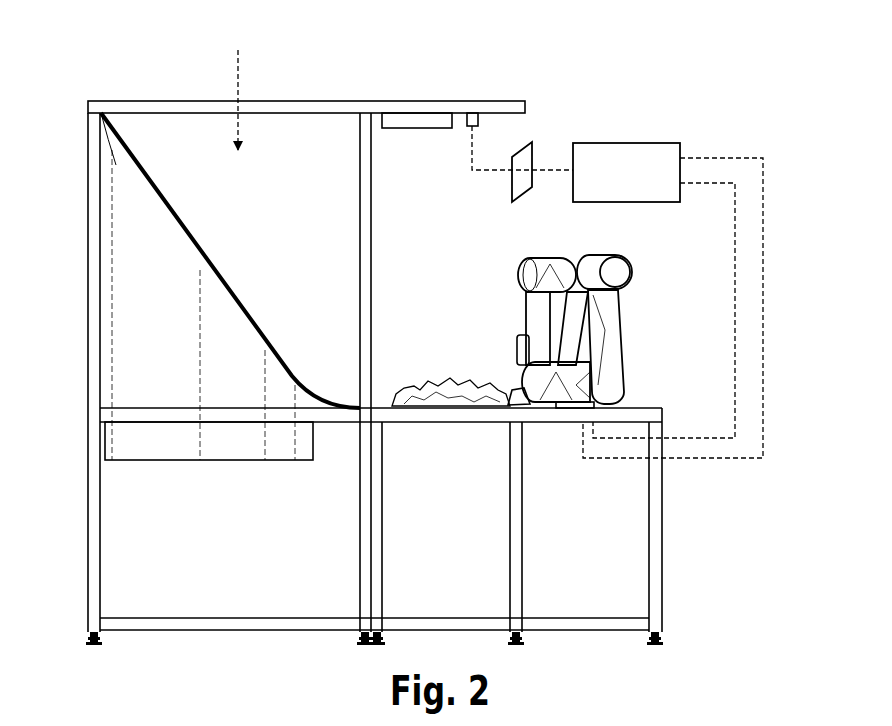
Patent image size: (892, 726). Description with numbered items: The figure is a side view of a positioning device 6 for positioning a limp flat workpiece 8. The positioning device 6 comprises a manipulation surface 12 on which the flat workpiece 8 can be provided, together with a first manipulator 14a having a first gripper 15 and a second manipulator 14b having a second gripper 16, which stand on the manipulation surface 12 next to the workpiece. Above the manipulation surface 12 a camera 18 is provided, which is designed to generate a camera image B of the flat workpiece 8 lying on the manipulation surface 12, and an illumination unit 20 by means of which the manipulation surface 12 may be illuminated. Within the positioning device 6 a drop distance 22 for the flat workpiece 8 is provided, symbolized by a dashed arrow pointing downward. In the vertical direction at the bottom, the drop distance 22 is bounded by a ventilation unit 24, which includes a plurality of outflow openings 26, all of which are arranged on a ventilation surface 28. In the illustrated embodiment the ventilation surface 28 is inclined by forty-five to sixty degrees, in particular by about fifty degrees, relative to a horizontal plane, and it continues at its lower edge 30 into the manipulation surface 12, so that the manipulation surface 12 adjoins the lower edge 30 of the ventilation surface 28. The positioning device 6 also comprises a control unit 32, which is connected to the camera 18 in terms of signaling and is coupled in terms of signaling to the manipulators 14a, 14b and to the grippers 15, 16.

The positioning device 6 is at (492, 90).
The flat workpiece 8 is at (446, 378).
The manipulation surface 12 is at (628, 404).
The first manipulator 14a is at (548, 392).
The second manipulator 14b is at (610, 320).
The first gripper 15 is at (506, 380).
The second gripper 16 is at (514, 391).
The camera 18 is at (479, 120).
The illumination unit 20 is at (432, 118).
The drop distance 22 is at (240, 68).
The ventilation unit 24 is at (216, 474).
The outflow openings 26 is at (220, 280).
The ventilation surface 28 is at (263, 328).
The lower edge 30 is at (376, 404).
The control unit 32 is at (667, 143).
The camera image B is at (510, 188).